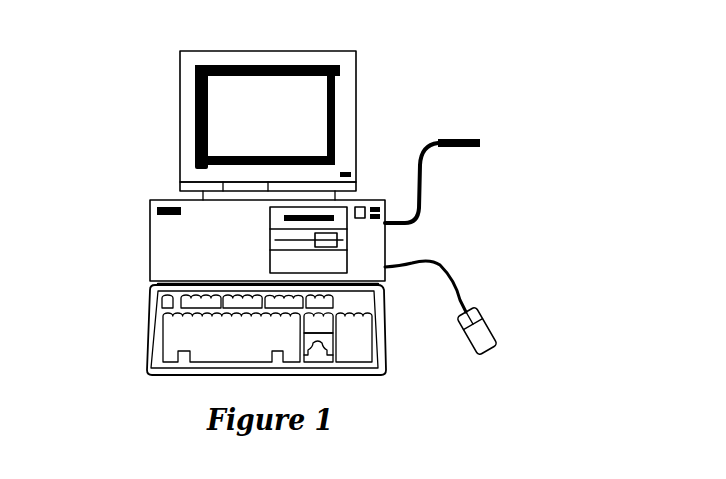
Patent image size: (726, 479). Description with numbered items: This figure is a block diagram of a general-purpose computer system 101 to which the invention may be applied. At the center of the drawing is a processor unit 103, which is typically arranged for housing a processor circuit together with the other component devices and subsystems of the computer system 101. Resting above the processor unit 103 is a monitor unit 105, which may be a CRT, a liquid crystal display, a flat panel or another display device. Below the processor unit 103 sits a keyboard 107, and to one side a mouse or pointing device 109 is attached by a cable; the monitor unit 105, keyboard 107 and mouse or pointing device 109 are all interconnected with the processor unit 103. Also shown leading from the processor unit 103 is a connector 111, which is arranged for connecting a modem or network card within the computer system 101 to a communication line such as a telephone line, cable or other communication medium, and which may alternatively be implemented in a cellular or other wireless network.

The computer system 101 is at (518, 75).
The processor unit 103 is at (173, 249).
The monitor unit 105 is at (180, 112).
The keyboard 107 is at (190, 339).
The mouse or pointing device 109 is at (488, 350).
The connector 111 is at (440, 139).